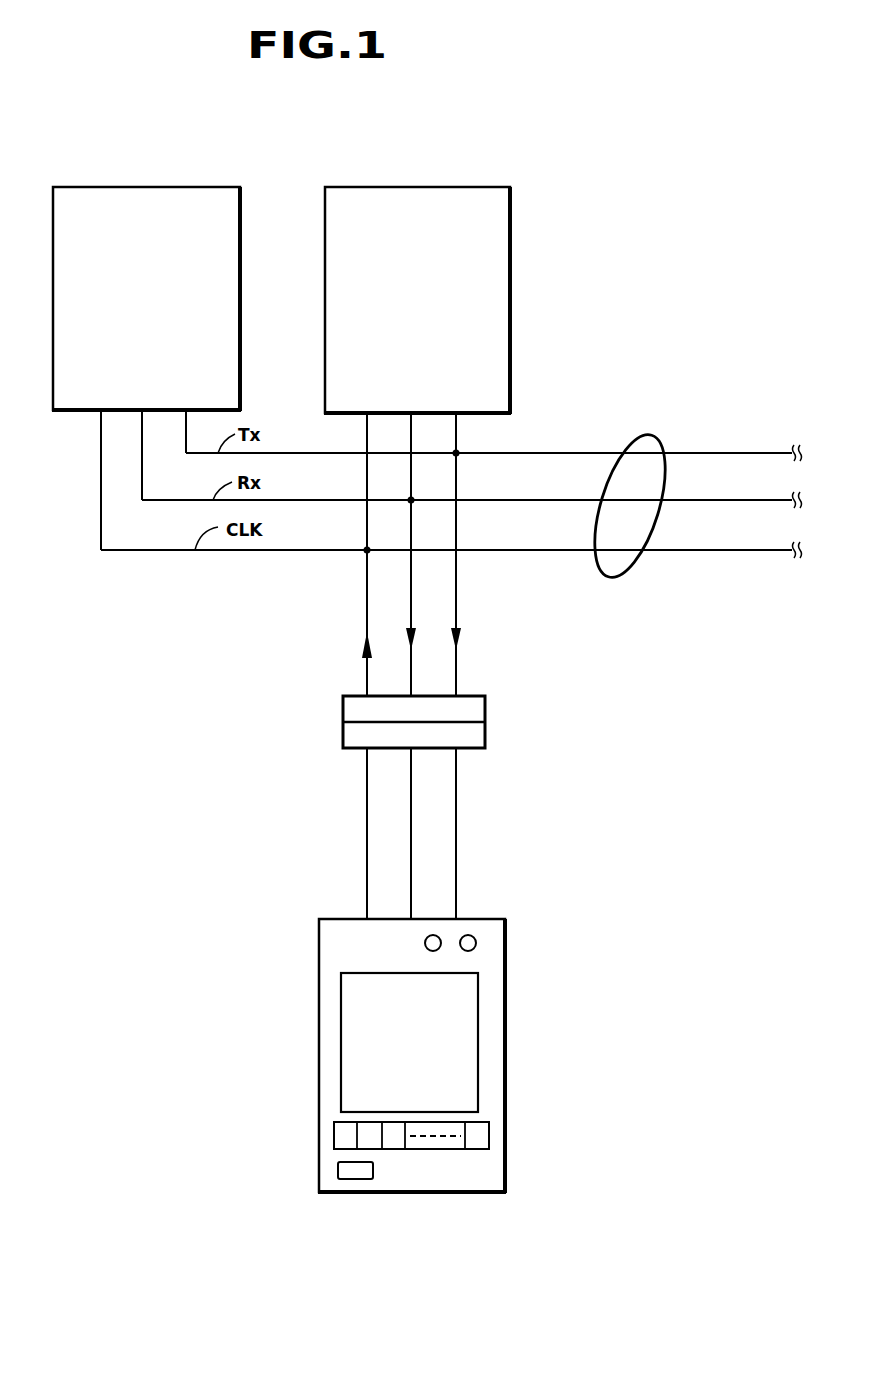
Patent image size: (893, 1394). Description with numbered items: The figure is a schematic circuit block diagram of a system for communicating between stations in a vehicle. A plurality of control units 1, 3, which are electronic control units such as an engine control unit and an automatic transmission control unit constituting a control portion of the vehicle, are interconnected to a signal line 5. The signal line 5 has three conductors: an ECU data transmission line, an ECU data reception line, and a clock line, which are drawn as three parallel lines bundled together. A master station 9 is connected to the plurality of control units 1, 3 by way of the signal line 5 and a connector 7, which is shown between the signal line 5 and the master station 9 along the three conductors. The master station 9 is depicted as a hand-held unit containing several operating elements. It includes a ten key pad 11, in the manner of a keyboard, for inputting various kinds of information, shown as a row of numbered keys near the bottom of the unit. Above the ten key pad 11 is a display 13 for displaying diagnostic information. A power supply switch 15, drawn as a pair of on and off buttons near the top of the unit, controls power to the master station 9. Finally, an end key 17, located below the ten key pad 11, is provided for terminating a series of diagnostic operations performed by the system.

The control unit 1 is at (216, 187).
The control unit 3 is at (484, 188).
The signal line 5 is at (633, 558).
The connector 7 is at (490, 699).
The master station 9 is at (330, 948).
The ten key pad 11 is at (489, 1131).
The display 13 is at (465, 1023).
The power supply switch 15 is at (478, 940).
The end key 17 is at (353, 1180).